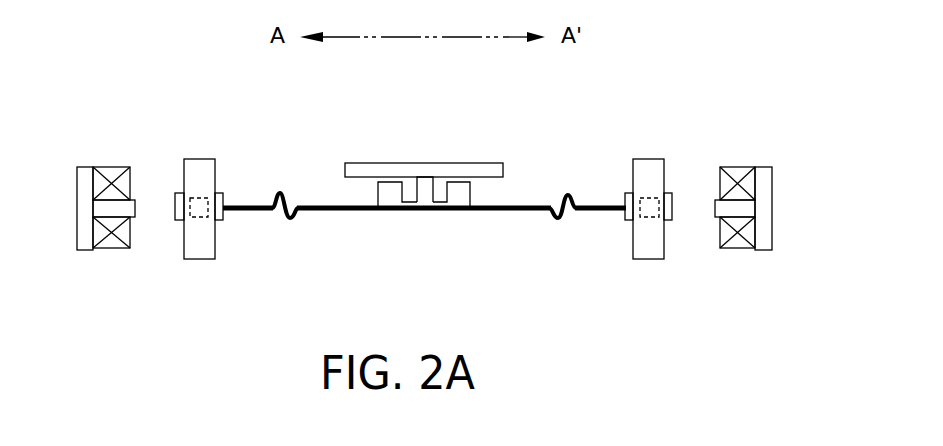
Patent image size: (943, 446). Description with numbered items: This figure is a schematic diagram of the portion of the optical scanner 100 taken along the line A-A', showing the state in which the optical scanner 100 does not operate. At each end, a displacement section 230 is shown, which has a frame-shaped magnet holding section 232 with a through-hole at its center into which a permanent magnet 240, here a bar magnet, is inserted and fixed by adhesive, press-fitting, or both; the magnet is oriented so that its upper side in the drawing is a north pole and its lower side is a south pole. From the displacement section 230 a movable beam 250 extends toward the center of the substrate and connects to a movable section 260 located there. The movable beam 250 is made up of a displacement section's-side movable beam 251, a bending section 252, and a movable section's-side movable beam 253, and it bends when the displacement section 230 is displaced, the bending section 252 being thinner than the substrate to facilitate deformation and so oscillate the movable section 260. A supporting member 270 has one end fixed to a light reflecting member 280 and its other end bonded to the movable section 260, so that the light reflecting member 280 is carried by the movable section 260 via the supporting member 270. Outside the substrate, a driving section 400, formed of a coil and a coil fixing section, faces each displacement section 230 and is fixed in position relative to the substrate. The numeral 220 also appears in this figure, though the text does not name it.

The optical scanner 100 is at (768, 20).
The hall sensor / position detector 220 is at (657, 225).
The displacement section 230 is at (723, 98).
The magnet holding section 232 is at (672, 199).
The permanent magnet 240 is at (641, 193).
The movable beam 250 is at (640, 297).
The displacement section's-side movable beam 251 is at (593, 209).
The bending section 252 is at (552, 209).
The movable section's-side movable beam 253 is at (512, 209).
The movable section 260 is at (415, 207).
The supporting member 270 is at (423, 186).
The light reflecting member 280 is at (463, 173).
The driving section 400 is at (757, 149).